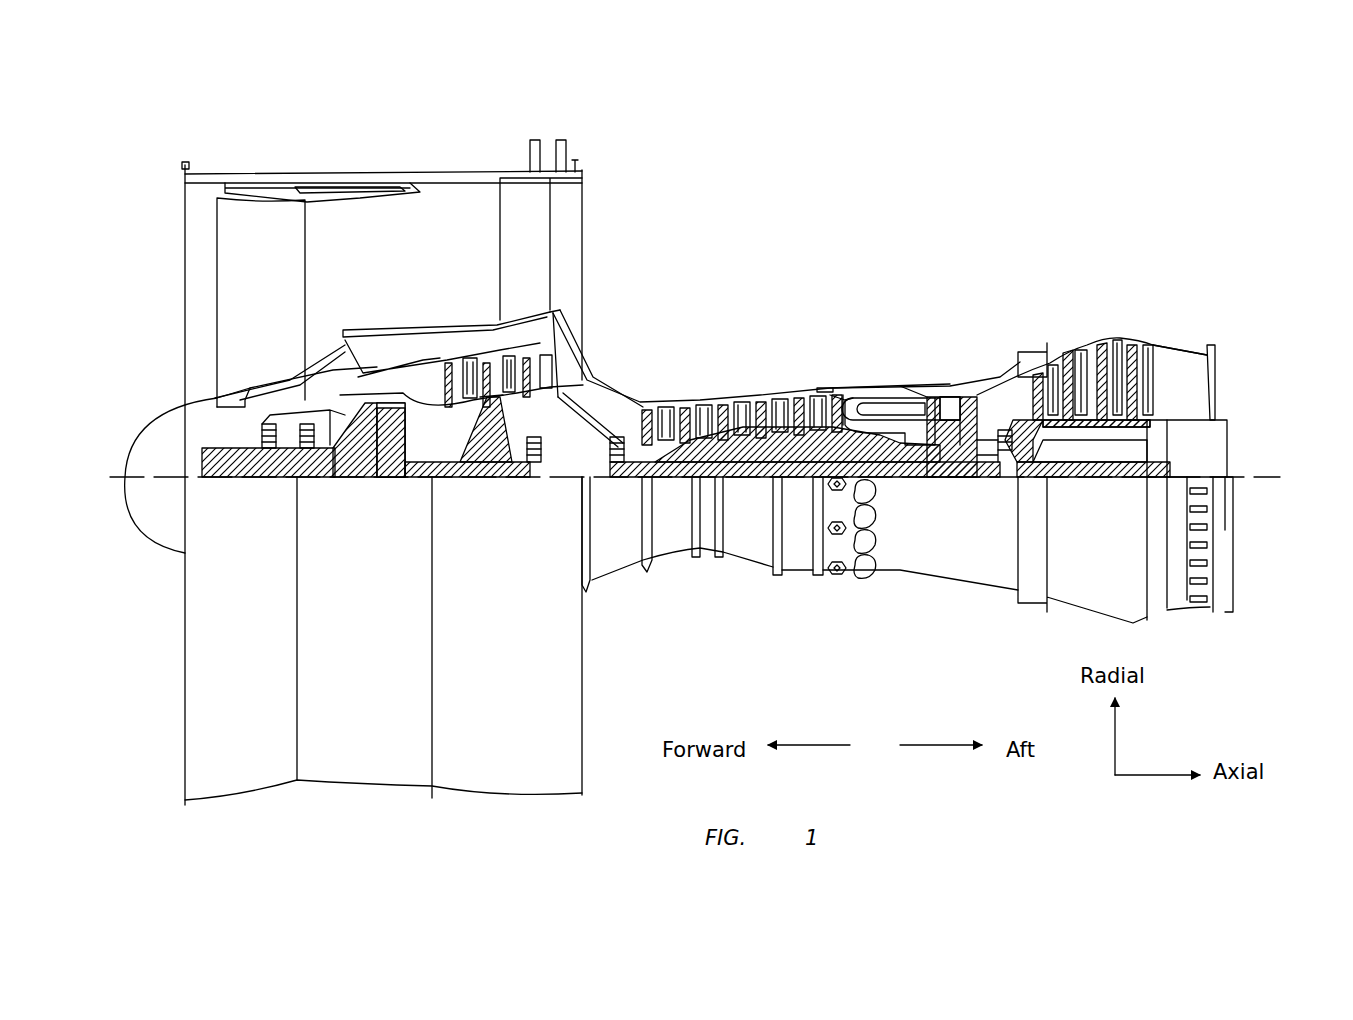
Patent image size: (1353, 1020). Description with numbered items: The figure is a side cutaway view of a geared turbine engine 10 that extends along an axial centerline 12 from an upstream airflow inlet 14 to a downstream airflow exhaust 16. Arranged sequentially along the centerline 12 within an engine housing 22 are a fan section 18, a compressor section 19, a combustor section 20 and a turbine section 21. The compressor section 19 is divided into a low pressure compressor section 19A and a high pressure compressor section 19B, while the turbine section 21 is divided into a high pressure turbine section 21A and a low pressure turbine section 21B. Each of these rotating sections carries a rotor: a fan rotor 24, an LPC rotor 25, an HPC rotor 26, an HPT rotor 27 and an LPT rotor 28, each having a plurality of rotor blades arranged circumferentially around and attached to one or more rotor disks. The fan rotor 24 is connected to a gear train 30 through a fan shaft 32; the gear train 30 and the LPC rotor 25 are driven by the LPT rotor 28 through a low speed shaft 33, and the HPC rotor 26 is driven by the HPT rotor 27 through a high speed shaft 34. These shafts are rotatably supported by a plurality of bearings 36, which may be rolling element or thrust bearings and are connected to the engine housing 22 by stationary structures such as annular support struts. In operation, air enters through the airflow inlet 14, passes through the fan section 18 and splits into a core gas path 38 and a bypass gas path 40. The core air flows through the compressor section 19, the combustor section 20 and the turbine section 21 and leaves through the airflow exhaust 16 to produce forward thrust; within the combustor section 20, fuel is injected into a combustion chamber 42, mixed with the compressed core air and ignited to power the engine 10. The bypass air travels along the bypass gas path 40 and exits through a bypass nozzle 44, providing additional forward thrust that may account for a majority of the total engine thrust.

The geared turbine engine 10 is at (152, 150).
The axial centerline 12 is at (1272, 490).
The airflow inlet 14 is at (183, 243).
The airflow exhaust 16 is at (1215, 375).
The fan section 18 is at (345, 150).
The compressor section 19 is at (800, 92).
The low pressure compressor section 19A is at (580, 135).
The high pressure compressor section 19B is at (795, 320).
The combustor section 20 is at (915, 320).
The turbine section 21 is at (1175, 250).
The high pressure turbine section 21A is at (1000, 320).
The low pressure turbine section 21B is at (1175, 320).
The engine housing 22 is at (605, 590).
The fan rotor 24 is at (215, 395).
The LPC rotor 25 is at (495, 445).
The HPC rotor 26 is at (742, 440).
The HPT rotor 27 is at (952, 478).
The LPT rotor 28 is at (1090, 430).
The gear train 30 is at (392, 480).
The fan shaft 32 is at (253, 480).
The low speed shaft 33 is at (805, 478).
The high speed shaft 34 is at (883, 460).
The bearings 36 is at (302, 449).
The core gas path 38 is at (605, 400).
The bypass gas path 40 is at (436, 257).
The combustion chamber 42 is at (878, 415).
The bypass nozzle 44 is at (585, 224).